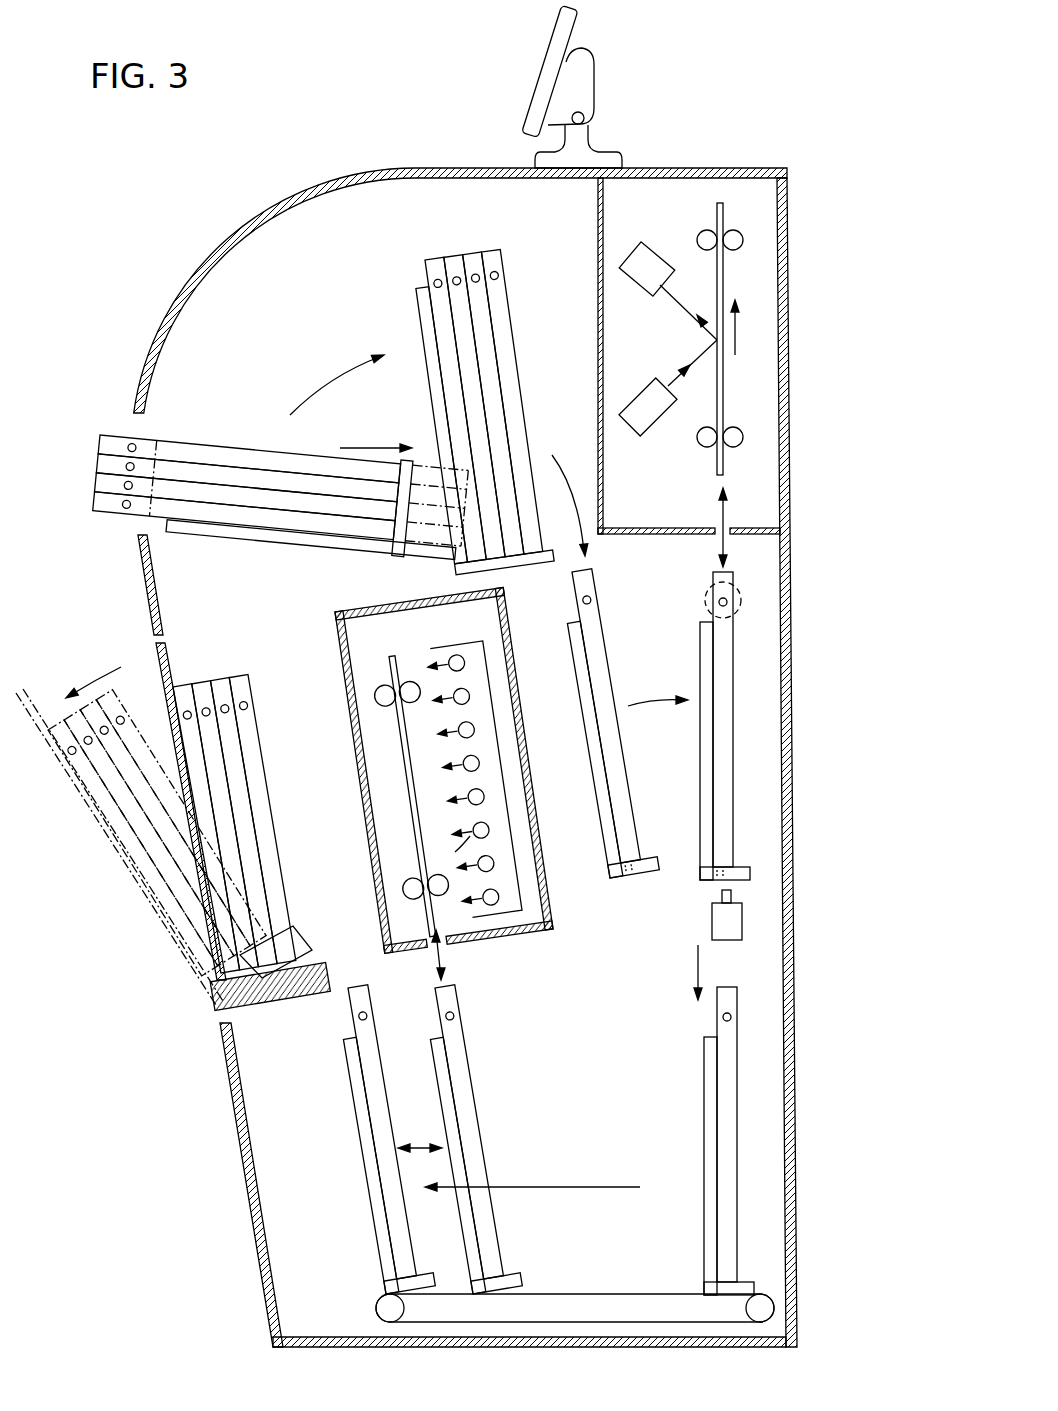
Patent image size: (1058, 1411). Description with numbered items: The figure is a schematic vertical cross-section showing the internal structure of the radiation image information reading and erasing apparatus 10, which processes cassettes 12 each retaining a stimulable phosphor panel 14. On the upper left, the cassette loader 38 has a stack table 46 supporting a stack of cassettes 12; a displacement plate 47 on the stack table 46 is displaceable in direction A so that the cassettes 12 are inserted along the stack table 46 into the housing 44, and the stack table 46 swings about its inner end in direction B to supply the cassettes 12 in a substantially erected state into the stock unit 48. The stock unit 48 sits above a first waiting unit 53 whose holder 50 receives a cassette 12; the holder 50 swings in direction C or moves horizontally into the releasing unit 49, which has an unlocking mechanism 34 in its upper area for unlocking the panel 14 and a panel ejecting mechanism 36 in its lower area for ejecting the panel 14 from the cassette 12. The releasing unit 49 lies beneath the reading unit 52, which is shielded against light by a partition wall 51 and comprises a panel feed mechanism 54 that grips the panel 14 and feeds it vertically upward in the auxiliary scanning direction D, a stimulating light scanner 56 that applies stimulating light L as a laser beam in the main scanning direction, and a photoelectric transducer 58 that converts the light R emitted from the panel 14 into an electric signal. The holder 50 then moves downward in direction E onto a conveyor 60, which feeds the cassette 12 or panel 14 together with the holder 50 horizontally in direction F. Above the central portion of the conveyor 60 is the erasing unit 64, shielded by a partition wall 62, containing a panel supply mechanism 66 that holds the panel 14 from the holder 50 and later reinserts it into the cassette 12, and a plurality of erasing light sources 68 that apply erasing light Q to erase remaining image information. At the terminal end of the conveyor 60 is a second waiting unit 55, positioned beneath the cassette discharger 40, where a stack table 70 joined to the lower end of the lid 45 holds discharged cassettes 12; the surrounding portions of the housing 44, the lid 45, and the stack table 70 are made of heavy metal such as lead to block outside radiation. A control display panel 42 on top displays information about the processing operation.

The radiation image information reading and erasing apparatus 10 is at (259, 141).
The cassette 12 is at (232, 452).
The stimulable phosphor panel 14 is at (716, 292).
The unlocking mechanism 34 is at (700, 600).
The panel ejecting mechanism 36 is at (740, 925).
The cassette loader 38 is at (172, 418).
The cassette discharger 40 is at (176, 985).
The control display panel 42 is at (543, 86).
The housing 44 is at (788, 452).
The lid 45 is at (158, 652).
The stack table 46 is at (424, 306).
The displacement plate 47 is at (398, 546).
The stock unit 48 is at (434, 250).
The releasing unit 49 is at (756, 648).
The holder 50 is at (632, 870).
The partition wall 51 is at (598, 256).
The reading unit 52 is at (720, 194).
The first waiting unit 53 is at (603, 900).
The panel feed mechanism 54 is at (698, 238).
The second waiting unit 55 is at (343, 1140).
The stimulating light scanner 56 is at (645, 398).
The photoelectric transducer 58 is at (640, 282).
The conveyor 60 is at (592, 1293).
The partition wall 62 is at (334, 656).
The erasing unit 64 is at (381, 780).
The panel supply mechanism 66 is at (371, 700).
The erasing light sources 68 is at (456, 660).
The stack table 70 is at (300, 992).